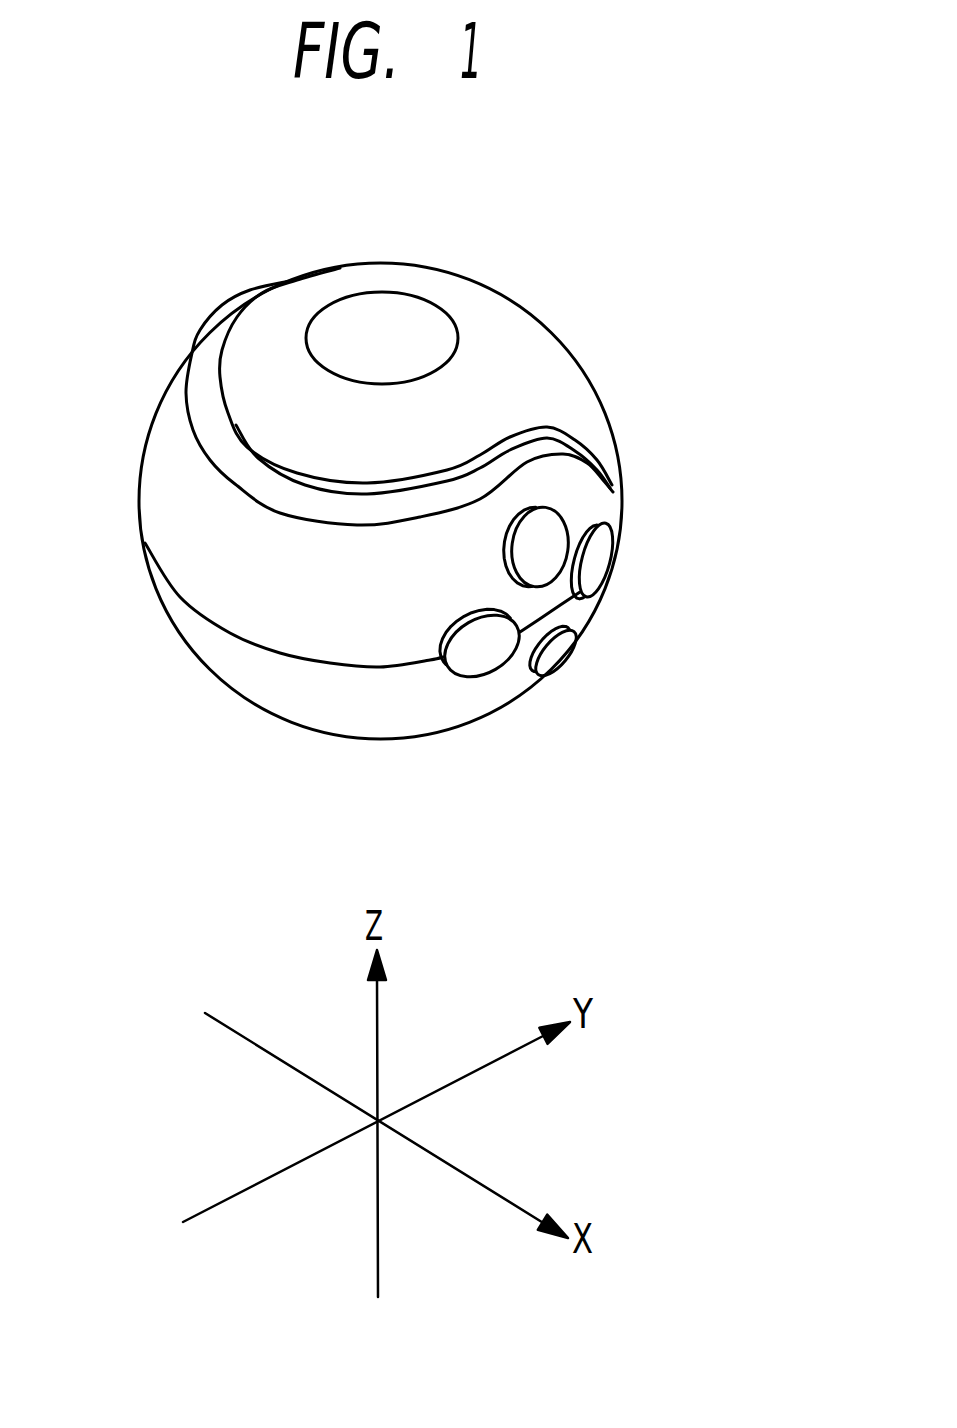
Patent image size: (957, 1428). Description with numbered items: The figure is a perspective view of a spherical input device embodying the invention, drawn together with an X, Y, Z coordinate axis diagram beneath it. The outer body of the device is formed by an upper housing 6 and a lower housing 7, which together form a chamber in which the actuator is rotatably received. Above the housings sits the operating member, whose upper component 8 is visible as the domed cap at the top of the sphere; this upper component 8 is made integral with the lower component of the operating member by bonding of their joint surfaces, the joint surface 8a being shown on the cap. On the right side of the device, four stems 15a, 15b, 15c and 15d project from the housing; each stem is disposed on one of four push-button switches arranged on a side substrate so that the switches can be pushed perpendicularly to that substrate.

The upper housing 6 is at (170, 470).
The lower housing 7 is at (270, 663).
The upper component of operating member 8 is at (548, 358).
The joint surface 8a is at (400, 320).
The stem 15a is at (553, 533).
The stem 15b is at (482, 650).
The stem 15c is at (560, 650).
The stem 15d is at (597, 562).